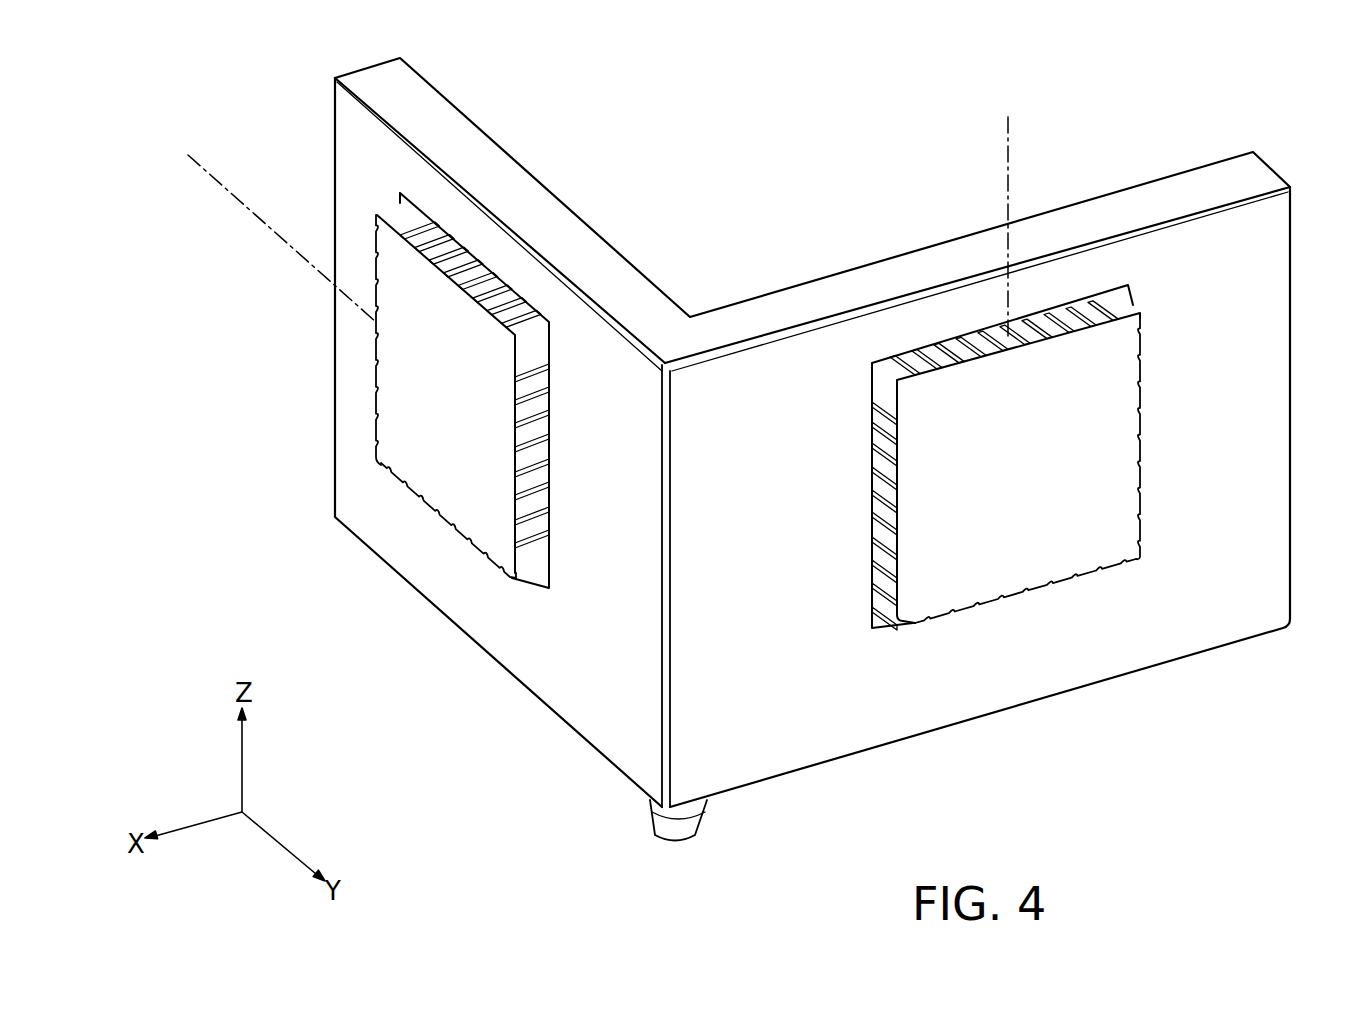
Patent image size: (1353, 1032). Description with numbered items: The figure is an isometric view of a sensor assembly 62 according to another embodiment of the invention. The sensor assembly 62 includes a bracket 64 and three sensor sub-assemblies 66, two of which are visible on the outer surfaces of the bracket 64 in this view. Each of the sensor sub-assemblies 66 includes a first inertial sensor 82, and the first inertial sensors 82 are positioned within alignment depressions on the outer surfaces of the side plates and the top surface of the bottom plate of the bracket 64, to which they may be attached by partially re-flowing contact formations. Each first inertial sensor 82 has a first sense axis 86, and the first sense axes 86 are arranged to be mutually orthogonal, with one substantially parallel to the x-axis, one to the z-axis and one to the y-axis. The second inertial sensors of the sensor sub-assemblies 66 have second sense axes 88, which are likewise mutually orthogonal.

The sensor assembly 62 is at (742, 413).
The bracket 64 is at (727, 778).
The sensor sub-assemblies 66 is at (305, 452).
The first inertial sensor 82 is at (387, 362).
The first sense axes 86 is at (238, 198).
The second sense axes 88 is at (1008, 147).